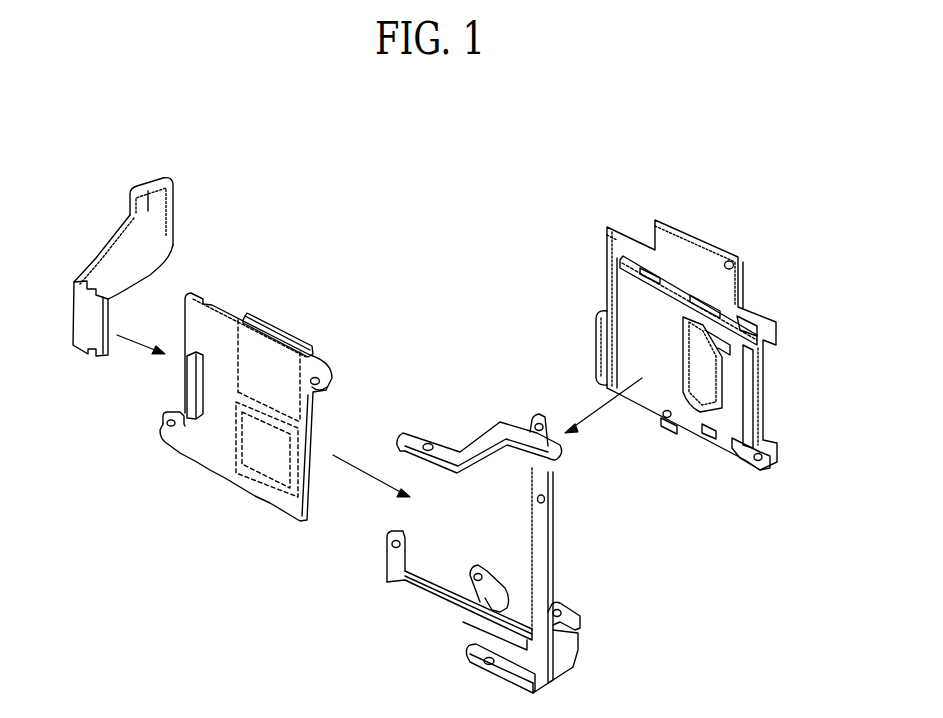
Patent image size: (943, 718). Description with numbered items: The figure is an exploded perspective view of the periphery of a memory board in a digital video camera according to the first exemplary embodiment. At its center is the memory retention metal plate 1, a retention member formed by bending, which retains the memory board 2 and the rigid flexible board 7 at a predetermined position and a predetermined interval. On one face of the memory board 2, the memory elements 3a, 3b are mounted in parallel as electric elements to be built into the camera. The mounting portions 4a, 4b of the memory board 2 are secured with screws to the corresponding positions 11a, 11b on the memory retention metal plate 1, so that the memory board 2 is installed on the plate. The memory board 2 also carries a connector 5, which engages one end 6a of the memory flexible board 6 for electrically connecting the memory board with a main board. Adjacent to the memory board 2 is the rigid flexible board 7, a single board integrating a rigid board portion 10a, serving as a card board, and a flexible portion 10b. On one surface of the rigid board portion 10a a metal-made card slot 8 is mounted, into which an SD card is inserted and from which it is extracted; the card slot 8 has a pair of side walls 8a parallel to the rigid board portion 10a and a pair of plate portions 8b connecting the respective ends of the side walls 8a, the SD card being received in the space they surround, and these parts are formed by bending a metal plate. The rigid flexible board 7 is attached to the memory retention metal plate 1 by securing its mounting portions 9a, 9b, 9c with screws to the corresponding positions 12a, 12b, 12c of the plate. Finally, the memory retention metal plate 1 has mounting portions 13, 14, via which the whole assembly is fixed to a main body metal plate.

The memory retention metal plate 1 is at (551, 541).
The memory board 2 is at (206, 300).
The memory element 3a is at (280, 332).
The memory element 3b is at (255, 478).
The mounting portion 4a is at (164, 432).
The mounting portion 4b is at (327, 382).
The connector 5 is at (192, 387).
The memory flexible board 6 is at (127, 236).
The one end of memory flexible board 6a is at (74, 312).
The rigid flexible board 7 is at (608, 270).
The card slot 8 is at (752, 410).
The side wall 8a is at (715, 372).
The plate portion 8b is at (748, 322).
The mounting portion 9a is at (668, 422).
The mounting portion 9b is at (760, 463).
The mounting portion 9c is at (729, 260).
The rigid board portion 10a is at (670, 231).
The flexible portion 10b is at (600, 345).
The corresponding position 11a is at (390, 547).
The corresponding position 11b is at (552, 499).
The corresponding position 12a is at (476, 570).
The corresponding position 12b is at (560, 612).
The corresponding position 12c is at (540, 418).
The mounting portion 13 is at (491, 667).
The mounting portion 14 is at (433, 442).